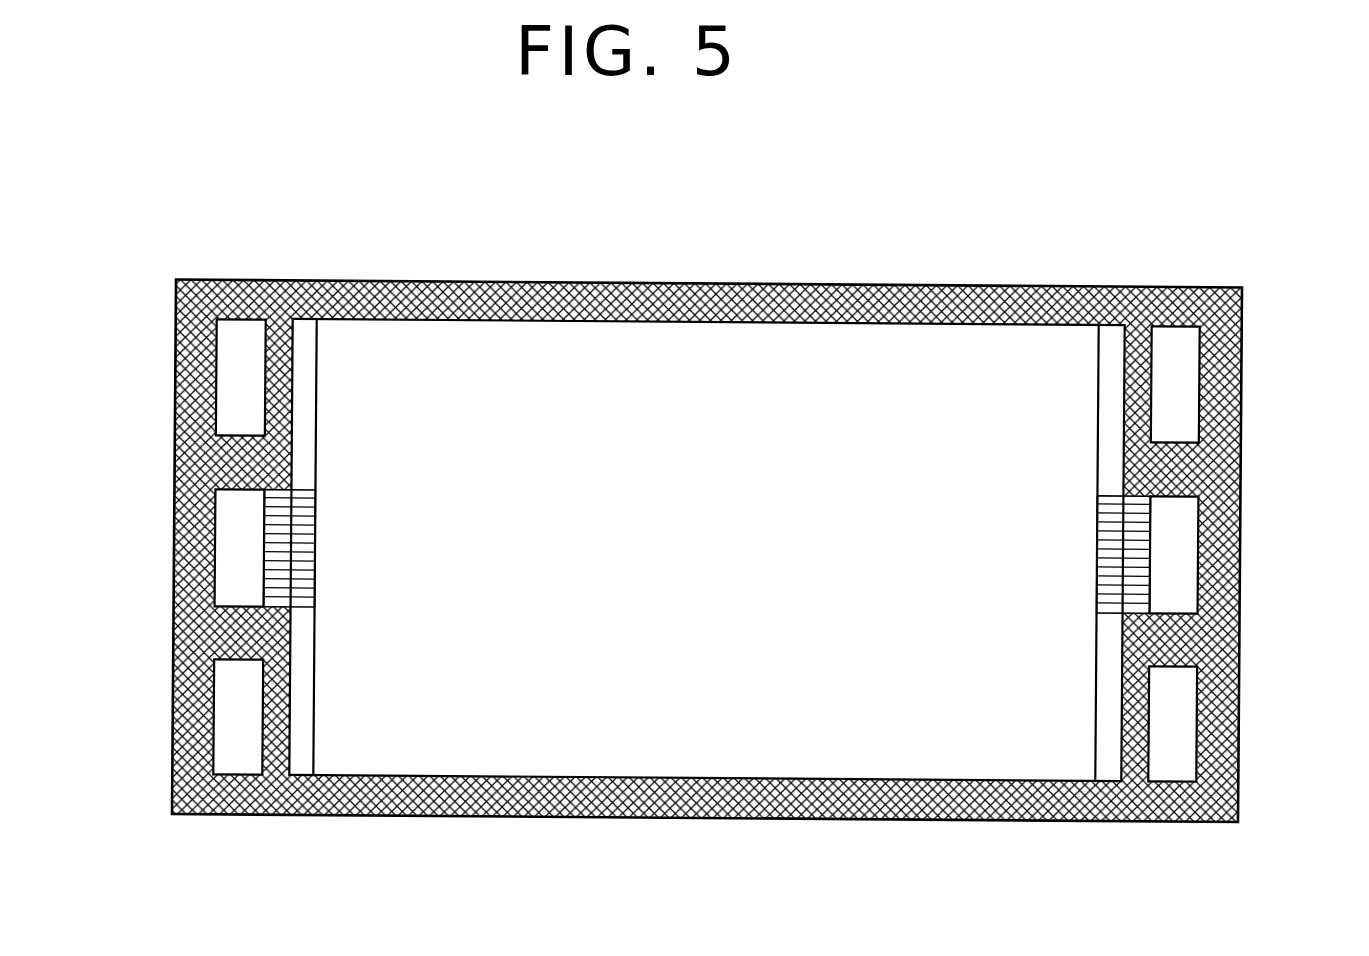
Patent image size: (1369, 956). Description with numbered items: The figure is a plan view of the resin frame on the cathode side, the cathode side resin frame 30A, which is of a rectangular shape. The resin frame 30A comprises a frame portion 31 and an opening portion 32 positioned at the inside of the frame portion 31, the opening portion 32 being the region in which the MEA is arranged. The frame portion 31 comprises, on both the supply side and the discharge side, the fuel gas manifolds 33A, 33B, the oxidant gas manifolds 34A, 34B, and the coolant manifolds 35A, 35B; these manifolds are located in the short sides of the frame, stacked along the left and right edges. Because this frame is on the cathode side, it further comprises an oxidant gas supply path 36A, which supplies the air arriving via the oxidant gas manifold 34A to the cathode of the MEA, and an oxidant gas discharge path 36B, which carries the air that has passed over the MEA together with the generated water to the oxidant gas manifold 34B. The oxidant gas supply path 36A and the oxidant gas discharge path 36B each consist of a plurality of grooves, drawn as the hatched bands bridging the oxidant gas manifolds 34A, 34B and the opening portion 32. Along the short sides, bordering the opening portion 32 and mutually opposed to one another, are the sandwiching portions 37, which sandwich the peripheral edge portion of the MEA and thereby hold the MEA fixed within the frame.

The cathode side resin frame 30A is at (883, 281).
The frame portion 31 is at (807, 795).
The opening portion 32 is at (593, 737).
The fuel gas manifold 33A is at (237, 358).
The fuel gas manifold 33B is at (1178, 364).
The oxidant gas manifold 34A is at (237, 522).
The oxidant gas manifold 34B is at (1178, 528).
The coolant manifold 35A is at (236, 740).
The coolant manifold 35B is at (1177, 699).
The oxidant gas supply path 36A is at (278, 490).
The oxidant gas discharge path 36B is at (1160, 468).
The sandwiching portions 37 is at (303, 378).